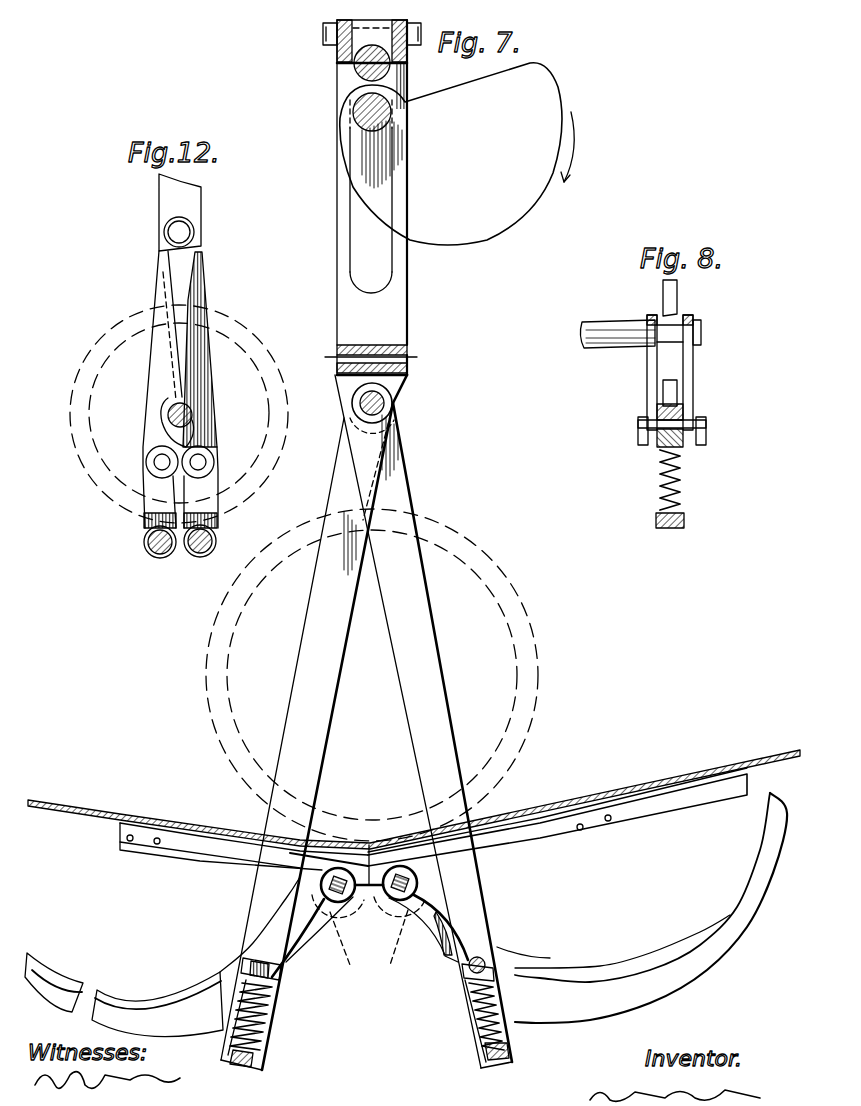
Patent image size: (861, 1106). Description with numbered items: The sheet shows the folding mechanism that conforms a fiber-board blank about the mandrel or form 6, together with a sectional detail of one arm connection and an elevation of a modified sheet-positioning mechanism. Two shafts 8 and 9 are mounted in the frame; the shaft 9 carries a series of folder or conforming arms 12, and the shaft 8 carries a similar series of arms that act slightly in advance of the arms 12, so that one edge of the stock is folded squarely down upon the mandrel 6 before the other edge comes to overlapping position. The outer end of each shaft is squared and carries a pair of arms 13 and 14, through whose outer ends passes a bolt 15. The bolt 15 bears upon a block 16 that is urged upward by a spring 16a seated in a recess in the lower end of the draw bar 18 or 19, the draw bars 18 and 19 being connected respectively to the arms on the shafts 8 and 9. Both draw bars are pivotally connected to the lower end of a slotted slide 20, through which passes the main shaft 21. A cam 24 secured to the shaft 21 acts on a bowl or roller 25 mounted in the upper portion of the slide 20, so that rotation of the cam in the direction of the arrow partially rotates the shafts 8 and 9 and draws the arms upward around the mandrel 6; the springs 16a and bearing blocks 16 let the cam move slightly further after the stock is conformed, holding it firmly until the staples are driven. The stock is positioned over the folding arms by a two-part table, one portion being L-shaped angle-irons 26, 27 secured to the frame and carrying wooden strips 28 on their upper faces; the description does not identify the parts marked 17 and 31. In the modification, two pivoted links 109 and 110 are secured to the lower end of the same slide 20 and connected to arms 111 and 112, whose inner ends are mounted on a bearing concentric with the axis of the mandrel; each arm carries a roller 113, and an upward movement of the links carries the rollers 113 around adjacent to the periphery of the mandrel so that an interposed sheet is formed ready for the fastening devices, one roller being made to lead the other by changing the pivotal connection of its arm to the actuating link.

In FIG. 7, the mandrel or form 6 is at (527, 640).
In FIG. 7, the shaft 8 is at (465, 907).
In FIG. 8, the shaft 8 is at (598, 318).
In FIG. 7, the shaft 9 is at (330, 935).
In FIG. 7, the folder or conforming arms 12 is at (170, 993).
In FIG. 7, the arm 13 is at (293, 953).
In FIG. 8, the arm 13 is at (650, 360).
In FIG. 7, the arm 14 is at (453, 957).
In FIG. 8, the arm 14 is at (693, 366).
In FIG. 7, the bolt 15 is at (460, 980).
In FIG. 8, the bolt 15 is at (685, 428).
In FIG. 7, the block 16 is at (470, 968).
In FIG. 8, the block 16 is at (661, 454).
In FIG. 7, the spring 16a is at (265, 1022).
In FIG. 7, the right curved blade 17 is at (540, 967).
In FIG. 7, the draw bar 18 is at (438, 690).
In FIG. 8, the draw bar 18 is at (677, 288).
In FIG. 7, the draw bar 19 is at (318, 723).
In FIG. 7, the slotted slide 20 is at (398, 272).
In FIG. 12, the slotted slide 20 is at (200, 206).
In FIG. 7, the main shaft 21 is at (392, 112).
In FIG. 7, the cam 24 is at (505, 222).
In FIG. 7, the bowl or roller 25 is at (354, 68).
In FIG. 7, the L-shaped angle-iron 26 is at (167, 850).
In FIG. 7, the L-shaped angle-iron 27 is at (545, 840).
In FIG. 7, the wooden strips 28 is at (343, 858).
In FIG. 7, the plate strip 31 is at (580, 796).
In FIG. 12, the pivoted link 109 is at (174, 257).
In FIG. 12, the pivoted link 110 is at (200, 366).
In FIG. 12, the arm 111 is at (165, 490).
In FIG. 12, the arm 112 is at (205, 472).
In FIG. 12, the roller 113 is at (194, 557).